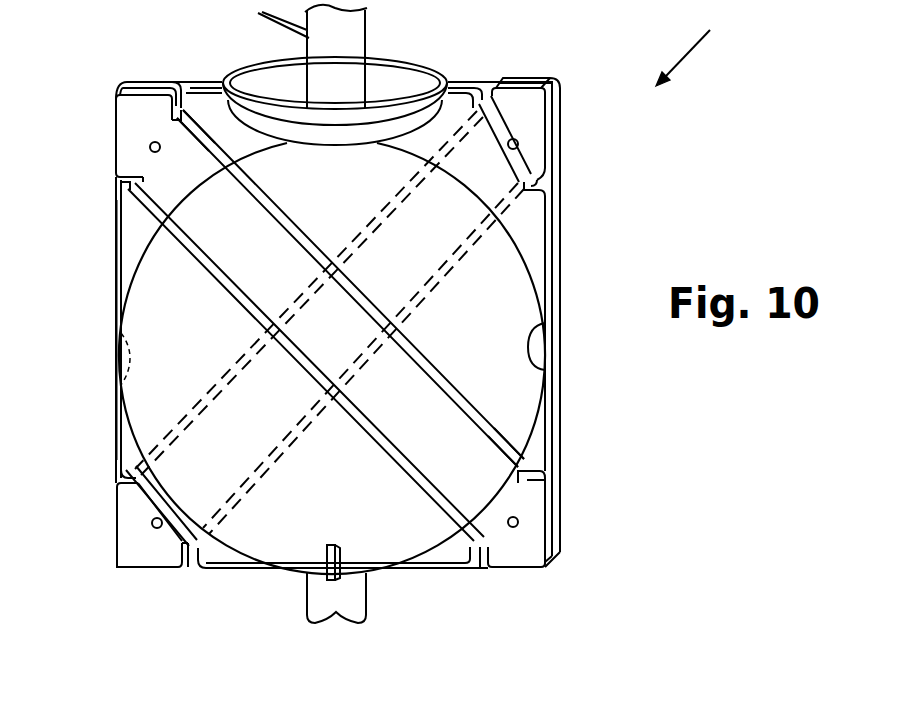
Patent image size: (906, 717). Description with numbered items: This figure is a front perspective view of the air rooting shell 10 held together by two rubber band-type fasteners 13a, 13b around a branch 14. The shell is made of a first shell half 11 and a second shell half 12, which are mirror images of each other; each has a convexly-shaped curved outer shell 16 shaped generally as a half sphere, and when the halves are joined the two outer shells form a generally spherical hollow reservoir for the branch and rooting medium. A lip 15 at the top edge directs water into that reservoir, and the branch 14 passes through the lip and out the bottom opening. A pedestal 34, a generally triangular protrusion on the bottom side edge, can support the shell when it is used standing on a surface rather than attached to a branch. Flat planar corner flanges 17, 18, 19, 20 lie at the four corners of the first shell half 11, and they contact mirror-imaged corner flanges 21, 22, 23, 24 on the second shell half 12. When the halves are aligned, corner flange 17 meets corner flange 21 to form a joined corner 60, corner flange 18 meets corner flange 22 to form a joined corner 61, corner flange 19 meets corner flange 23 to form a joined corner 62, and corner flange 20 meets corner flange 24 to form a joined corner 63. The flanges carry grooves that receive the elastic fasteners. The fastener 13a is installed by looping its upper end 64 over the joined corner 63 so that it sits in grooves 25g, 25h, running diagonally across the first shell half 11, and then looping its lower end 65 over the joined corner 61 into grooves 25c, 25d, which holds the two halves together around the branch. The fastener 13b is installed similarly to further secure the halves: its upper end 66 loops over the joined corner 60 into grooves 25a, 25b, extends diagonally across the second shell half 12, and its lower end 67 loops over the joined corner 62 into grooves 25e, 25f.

The air rooting shell 10 is at (697, 57).
The first shell half 11 is at (148, 412).
The second shell half 12 is at (560, 122).
The fastener 13a is at (210, 255).
The fastener 13b is at (400, 213).
The branch 14 is at (352, 64).
The lip 15 is at (397, 57).
The curved outer shell 16 is at (338, 336).
The corner flange 17 is at (532, 113).
The corner flange 18 is at (530, 545).
The corner flange 19 is at (125, 540).
The corner flange 20 is at (130, 140).
The corner flange 21 is at (545, 85).
The corner flange 22 is at (560, 525).
The corner flange 23 is at (130, 472).
The corner flange 24 is at (127, 82).
The groove 25a is at (487, 83).
The groove 25b is at (553, 185).
The groove 25c is at (556, 470).
The groove 25d is at (481, 550).
The groove 25e is at (192, 562).
The groove 25f is at (125, 483).
The groove 25g is at (125, 187).
The groove 25h is at (183, 95).
The pedestal 34 is at (330, 548).
The joined corner 60 is at (553, 85).
The joined corner 61 is at (550, 567).
The joined corner 62 is at (130, 570).
The joined corner 63 is at (120, 100).
The upper end 64 is at (206, 153).
The lower end 65 is at (497, 455).
The upper end 66 is at (500, 155).
The lower end 67 is at (172, 496).